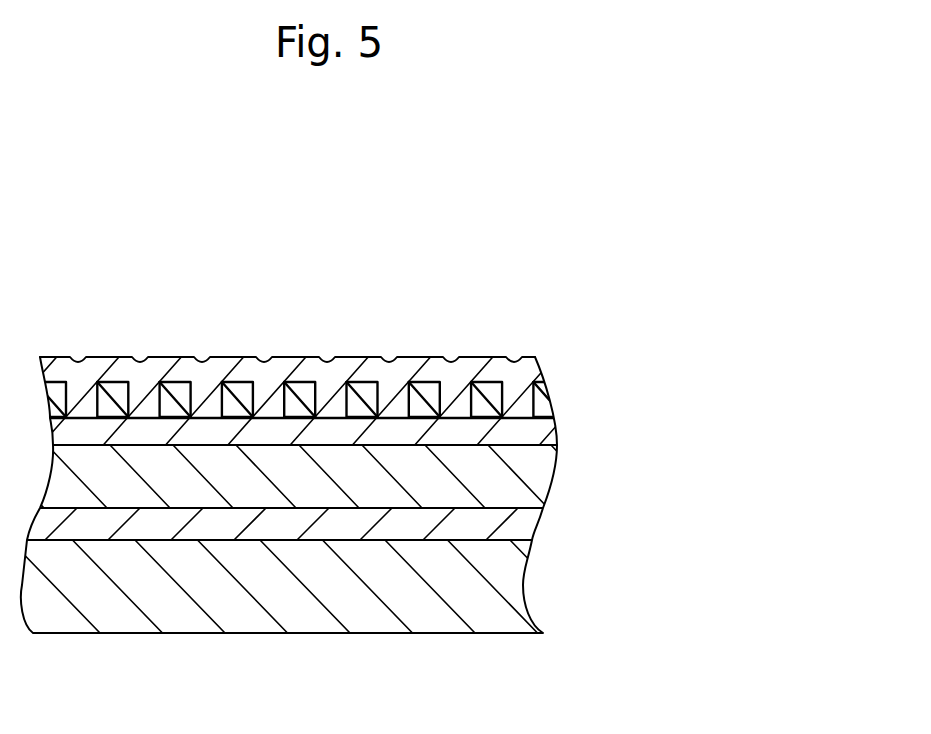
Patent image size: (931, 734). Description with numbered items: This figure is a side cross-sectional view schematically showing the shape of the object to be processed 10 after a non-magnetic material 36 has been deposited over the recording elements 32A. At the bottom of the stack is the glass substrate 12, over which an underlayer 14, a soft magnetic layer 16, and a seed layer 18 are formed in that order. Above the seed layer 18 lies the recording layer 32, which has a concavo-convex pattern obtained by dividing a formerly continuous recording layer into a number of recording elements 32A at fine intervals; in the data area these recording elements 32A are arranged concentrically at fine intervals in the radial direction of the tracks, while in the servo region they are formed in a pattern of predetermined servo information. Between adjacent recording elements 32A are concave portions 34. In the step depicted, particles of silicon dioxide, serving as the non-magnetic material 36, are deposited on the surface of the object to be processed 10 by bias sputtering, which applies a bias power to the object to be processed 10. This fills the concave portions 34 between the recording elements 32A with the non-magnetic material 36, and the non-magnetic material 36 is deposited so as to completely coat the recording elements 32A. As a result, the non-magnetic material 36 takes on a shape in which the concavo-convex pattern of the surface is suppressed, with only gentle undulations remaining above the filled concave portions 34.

The object to be processed 10 is at (307, 186).
The glass substrate 12 is at (525, 587).
The underlayer 14 is at (538, 525).
The soft magnetic layer 16 is at (553, 478).
The seed layer 18 is at (553, 432).
The recording layer 32 is at (562, 397).
The recording element 32A is at (290, 383).
The concave portion 34 is at (263, 383).
The non-magnetic material 36 is at (540, 370).